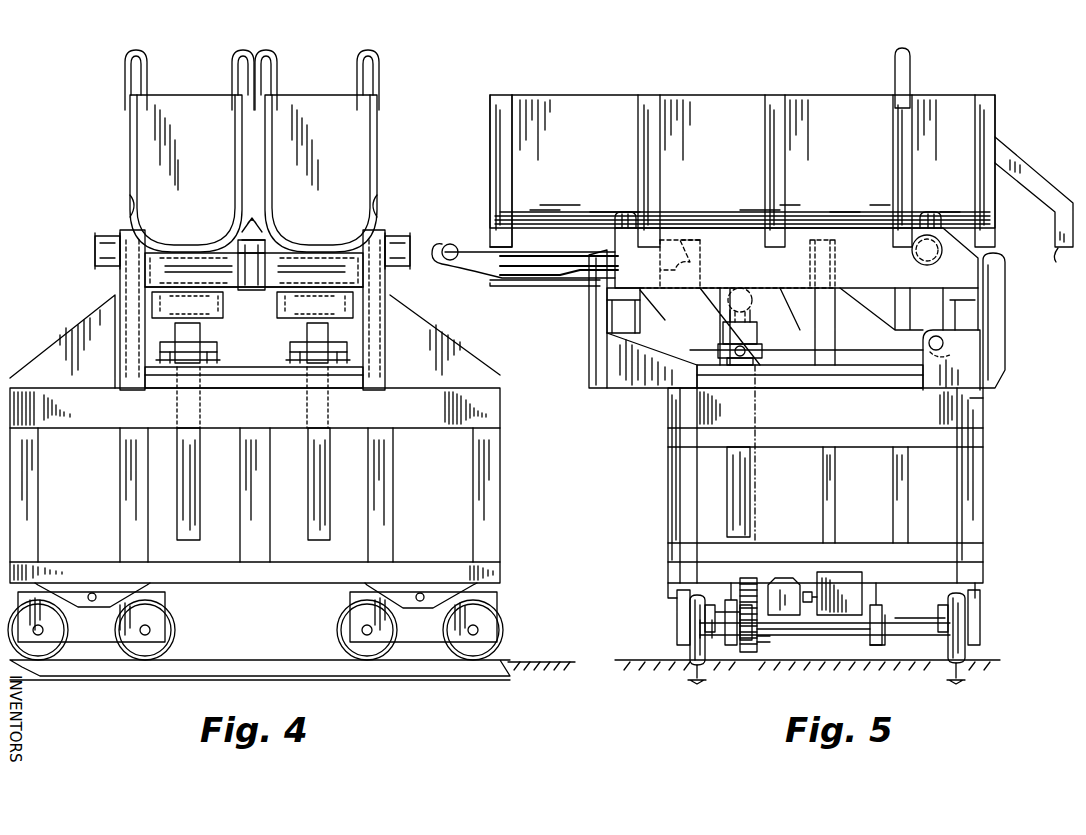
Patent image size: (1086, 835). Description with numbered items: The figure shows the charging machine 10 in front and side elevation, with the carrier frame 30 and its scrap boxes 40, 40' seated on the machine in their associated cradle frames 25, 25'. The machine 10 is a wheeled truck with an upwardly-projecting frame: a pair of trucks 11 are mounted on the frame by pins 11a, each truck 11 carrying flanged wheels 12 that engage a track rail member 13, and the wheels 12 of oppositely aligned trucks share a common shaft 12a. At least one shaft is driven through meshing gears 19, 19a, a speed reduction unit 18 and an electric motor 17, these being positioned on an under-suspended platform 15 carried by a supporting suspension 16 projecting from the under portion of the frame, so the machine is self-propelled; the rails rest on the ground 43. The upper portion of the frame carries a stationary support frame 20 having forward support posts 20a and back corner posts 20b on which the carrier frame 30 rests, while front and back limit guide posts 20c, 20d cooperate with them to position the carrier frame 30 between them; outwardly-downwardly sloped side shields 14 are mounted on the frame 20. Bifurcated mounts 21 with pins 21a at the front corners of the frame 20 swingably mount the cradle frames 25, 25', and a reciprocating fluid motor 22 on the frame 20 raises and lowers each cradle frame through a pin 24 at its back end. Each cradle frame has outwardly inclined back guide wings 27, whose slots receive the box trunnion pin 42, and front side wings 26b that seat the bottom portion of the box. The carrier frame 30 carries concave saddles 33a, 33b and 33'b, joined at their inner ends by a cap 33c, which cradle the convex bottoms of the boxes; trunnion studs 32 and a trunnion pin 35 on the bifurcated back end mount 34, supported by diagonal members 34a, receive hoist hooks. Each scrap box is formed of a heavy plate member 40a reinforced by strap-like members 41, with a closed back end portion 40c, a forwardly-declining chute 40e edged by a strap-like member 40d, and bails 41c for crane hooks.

In FIG. 4, the charging machine 10 is at (508, 503).
In FIG. 5, the charging machine 10 is at (989, 492).
In FIG. 4, the truck 11 is at (166, 595).
In FIG. 5, the truck 11 is at (677, 612).
In FIG. 4, the pin 11a is at (92, 594).
In FIG. 5, the pin 11a is at (668, 598).
In FIG. 4, the flanged wheel 12 is at (176, 634).
In FIG. 5, the flanged wheel 12 is at (690, 642).
In FIG. 4, the common shaft 12a is at (150, 630).
In FIG. 5, the common shaft 12a is at (895, 632).
In FIG. 4, the track rail member 13 is at (475, 676).
In FIG. 5, the track rail member 13 is at (688, 682).
In FIG. 4, the side shield 14 is at (68, 337).
In FIG. 5, the under-suspended platform 15 is at (830, 625).
In FIG. 5, the supporting suspension 16 is at (726, 580).
In FIG. 5, the electric motor 17 is at (846, 572).
In FIG. 5, the speed reduction unit 18 is at (785, 575).
In FIG. 5, the gear 19 is at (742, 578).
In FIG. 5, the gear 19a is at (766, 648).
In FIG. 4, the support frame 20 is at (293, 390).
In FIG. 5, the support frame 20 is at (642, 388).
In FIG. 5, the support post 20a is at (975, 308).
In FIG. 5, the corner post 20b is at (624, 287).
In FIG. 5, the front limit guide post 20c is at (1006, 296).
In FIG. 4, the back limit guide post 20d is at (120, 284).
In FIG. 5, the back limit guide post 20d is at (589, 350).
In FIG. 5, the bifurcated mount 21 is at (983, 396).
In FIG. 5, the pin 21a is at (946, 341).
In FIG. 4, the reciprocating fluid motor 22 is at (198, 474).
In FIG. 5, the reciprocating fluid motor 22 is at (727, 470).
In FIG. 5, the pin 24 is at (748, 286).
In FIG. 4, the cradle frame 25 is at (301, 327).
In FIG. 5, the cradle frame 25 is at (717, 337).
In FIG. 4, the actuator 25' is at (202, 327).
In FIG. 5, the front side wing 26b is at (806, 264).
In FIG. 5, the back guide wing 27 is at (702, 250).
In FIG. 5, the carrier frame 30 is at (749, 226).
In FIG. 4, the trunnion stud 32 is at (106, 234).
In FIG. 5, the trunnion stud 32 is at (912, 250).
In FIG. 5, the front end saddle 33a is at (932, 208).
In FIG. 4, the back end saddle 33b is at (375, 194).
In FIG. 5, the back end saddle 33b is at (618, 200).
In FIG. 4, the back end saddle 33'b is at (106, 193).
In FIG. 4, the cap 33c is at (255, 222).
In FIG. 5, the bifurcated back end mount 34 is at (505, 264).
In FIG. 5, the diagonal member 34a is at (568, 288).
In FIG. 4, the trunnion pin 35 is at (262, 242).
In FIG. 5, the trunnion pin 35 is at (446, 244).
In FIG. 4, the scrap box 40 is at (337, 173).
In FIG. 5, the scrap box 40 is at (742, 143).
In FIG. 4, the scrap box 40' is at (160, 173).
In FIG. 5, the plate member 40a is at (740, 94).
In FIG. 5, the back end portion 40c is at (490, 118).
In FIG. 5, the strap-like member 40d is at (1042, 146).
In FIG. 5, the chute 40e is at (1074, 259).
In FIG. 5, the reinforcing strap-like member 41 is at (490, 148).
In FIG. 4, the bail 41c is at (130, 50).
In FIG. 5, the bail 41c is at (895, 62).
In FIG. 5, the trunnion pin 42 is at (666, 231).
In FIG. 4, the floor 43 is at (556, 660).